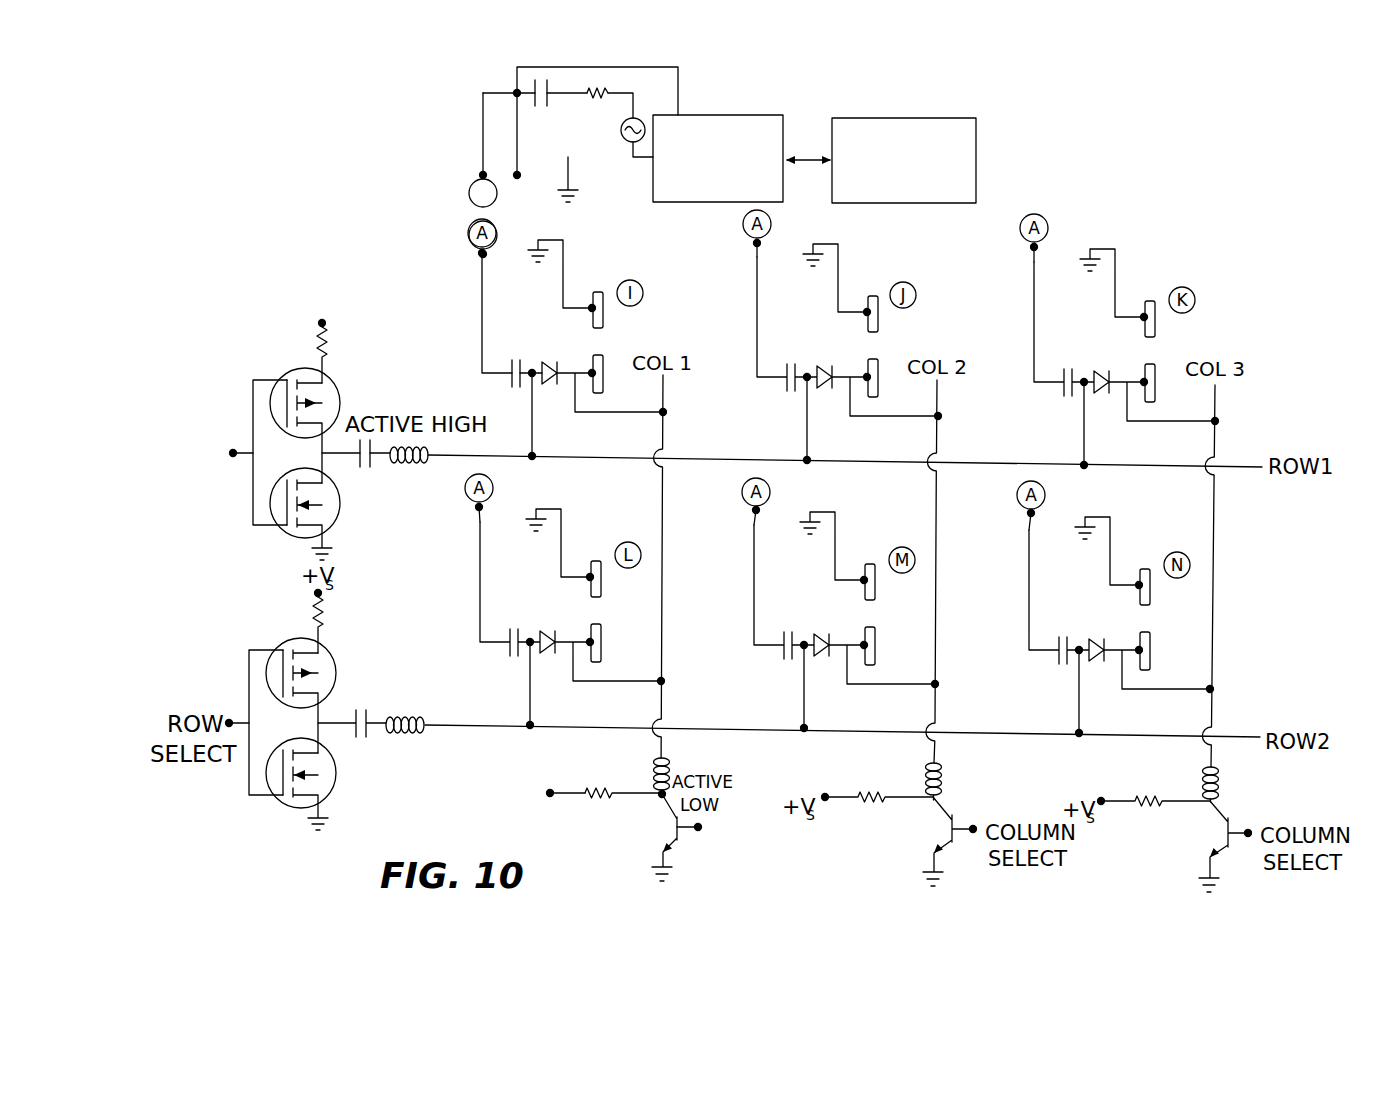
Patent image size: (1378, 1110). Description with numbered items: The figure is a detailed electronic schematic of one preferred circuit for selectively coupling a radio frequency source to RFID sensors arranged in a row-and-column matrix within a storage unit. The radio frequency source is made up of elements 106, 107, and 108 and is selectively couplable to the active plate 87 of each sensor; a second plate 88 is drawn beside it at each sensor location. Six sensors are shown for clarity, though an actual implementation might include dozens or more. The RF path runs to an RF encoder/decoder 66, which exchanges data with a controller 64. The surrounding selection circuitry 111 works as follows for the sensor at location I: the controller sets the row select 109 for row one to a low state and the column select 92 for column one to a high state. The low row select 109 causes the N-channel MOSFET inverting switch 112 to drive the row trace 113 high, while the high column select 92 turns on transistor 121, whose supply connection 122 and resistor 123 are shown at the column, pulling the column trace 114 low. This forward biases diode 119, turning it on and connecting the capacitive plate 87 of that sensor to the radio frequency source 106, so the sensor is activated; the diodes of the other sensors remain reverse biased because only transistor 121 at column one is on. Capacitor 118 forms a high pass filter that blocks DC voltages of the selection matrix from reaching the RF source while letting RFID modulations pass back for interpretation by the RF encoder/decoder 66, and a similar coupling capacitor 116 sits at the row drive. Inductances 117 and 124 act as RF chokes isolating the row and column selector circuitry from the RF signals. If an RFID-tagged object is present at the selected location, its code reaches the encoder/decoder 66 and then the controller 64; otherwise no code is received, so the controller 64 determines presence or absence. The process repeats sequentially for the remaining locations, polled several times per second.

The controller 64 is at (940, 118).
The RF encoder/decoder 66 is at (753, 115).
The active plate 87 is at (598, 357).
The grounded electrode element 88 is at (598, 292).
The column select 92 is at (688, 832).
The radio frequency source 106 is at (641, 117).
The radio frequency source element 107 is at (528, 109).
The radio frequency source element 108 is at (588, 100).
The row select 109 is at (237, 447).
The drive circuit 111 is at (338, 160).
The N-channel MOSFET inverting switch 112 is at (345, 368).
The row trace 113 is at (510, 460).
The column trace 114 is at (665, 430).
The row coupling capacitor 116 is at (366, 485).
The inductance 117 is at (415, 480).
The capacitor 118 is at (512, 350).
The diode 119 is at (551, 398).
The transistor 121 is at (640, 843).
The supply voltage node 122 is at (527, 777).
The pull-up resistor 123 is at (603, 778).
The inductance 124 is at (677, 755).